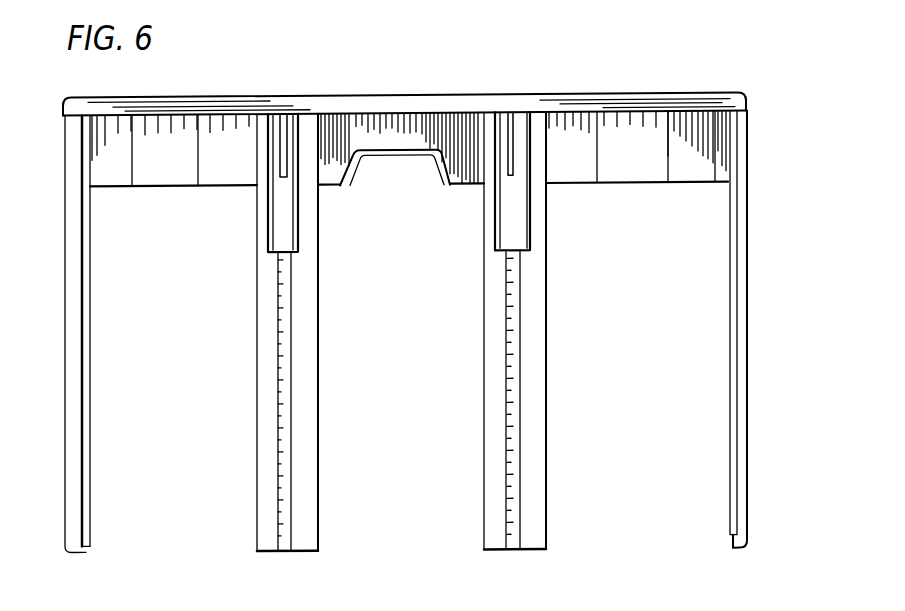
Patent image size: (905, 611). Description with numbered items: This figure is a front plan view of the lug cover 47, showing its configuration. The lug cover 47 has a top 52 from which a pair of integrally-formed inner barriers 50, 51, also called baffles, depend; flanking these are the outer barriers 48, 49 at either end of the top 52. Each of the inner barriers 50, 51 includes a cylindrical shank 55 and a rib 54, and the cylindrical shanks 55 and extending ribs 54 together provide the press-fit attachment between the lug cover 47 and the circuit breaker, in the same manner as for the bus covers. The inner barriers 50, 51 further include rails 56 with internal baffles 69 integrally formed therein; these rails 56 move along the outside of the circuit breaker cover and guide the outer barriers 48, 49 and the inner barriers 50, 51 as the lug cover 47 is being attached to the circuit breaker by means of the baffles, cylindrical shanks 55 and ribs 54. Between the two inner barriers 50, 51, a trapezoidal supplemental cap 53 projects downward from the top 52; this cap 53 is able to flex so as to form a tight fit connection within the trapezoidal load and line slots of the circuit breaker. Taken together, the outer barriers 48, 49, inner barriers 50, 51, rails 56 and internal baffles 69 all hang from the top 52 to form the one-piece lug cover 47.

The lug cover 47 is at (374, 272).
The outer barrier 48 is at (747, 297).
The outer barrier 49 is at (63, 292).
The inner barrier 50 is at (250, 447).
The inner barrier 51 is at (509, 302).
The top 52 is at (660, 93).
The trapezoidal supplemental cap 53 is at (387, 158).
The rib 54 is at (508, 134).
The cylindrical shank 55 is at (527, 237).
The rail 56 is at (545, 373).
The internal baffle 69 is at (522, 440).